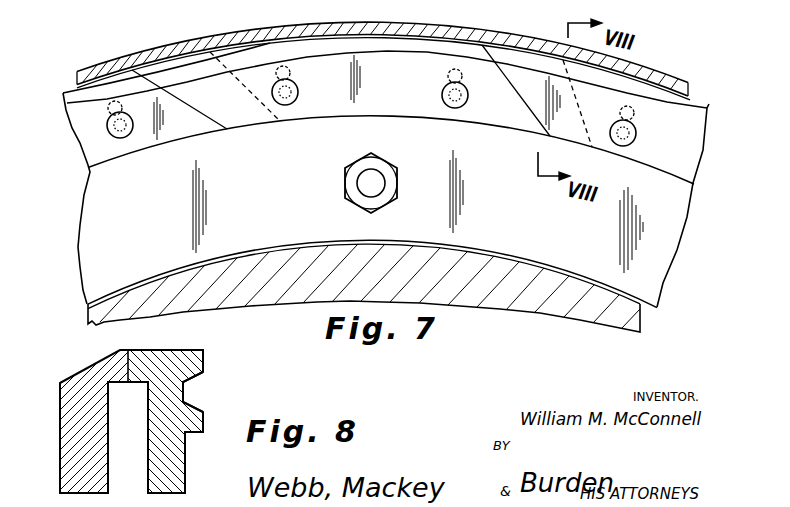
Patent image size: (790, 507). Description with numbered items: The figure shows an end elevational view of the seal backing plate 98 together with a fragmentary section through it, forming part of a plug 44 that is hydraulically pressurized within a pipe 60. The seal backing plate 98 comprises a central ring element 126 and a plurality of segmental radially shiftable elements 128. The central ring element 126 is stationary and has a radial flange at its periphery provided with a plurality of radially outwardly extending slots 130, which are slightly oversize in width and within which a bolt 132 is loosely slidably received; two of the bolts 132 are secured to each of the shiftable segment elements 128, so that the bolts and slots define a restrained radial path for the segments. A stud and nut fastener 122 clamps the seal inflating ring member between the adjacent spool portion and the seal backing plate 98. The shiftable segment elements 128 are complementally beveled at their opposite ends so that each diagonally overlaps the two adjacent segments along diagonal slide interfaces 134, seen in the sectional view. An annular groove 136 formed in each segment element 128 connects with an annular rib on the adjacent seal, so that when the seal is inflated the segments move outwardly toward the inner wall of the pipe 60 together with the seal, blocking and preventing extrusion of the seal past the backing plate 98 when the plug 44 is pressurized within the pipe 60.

In FIG. 7, the plug 44 is at (639, 318).
In FIG. 7, the pipe 60 is at (218, 42).
In FIG. 7, the seal backing plate 98 is at (83, 198).
In FIG. 7, the stud and nut fastener 122 is at (399, 184).
In FIG. 7, the central ring element 126 is at (685, 219).
In FIG. 7, the segmental radially shiftable element 128 is at (183, 138).
In FIG. 8, the segmental radially shiftable element 128 is at (67, 417).
In FIG. 7, the slot 130 is at (291, 74).
In FIG. 7, the bolt 132 is at (441, 96).
In FIG. 8, the diagonal slide interface 134 is at (132, 352).
In FIG. 8, the annular groove 136 is at (198, 382).